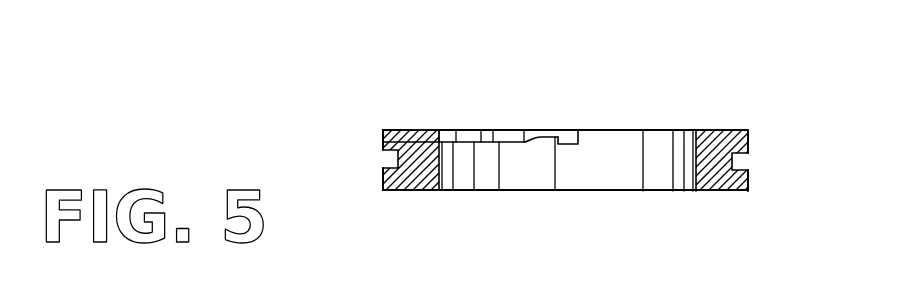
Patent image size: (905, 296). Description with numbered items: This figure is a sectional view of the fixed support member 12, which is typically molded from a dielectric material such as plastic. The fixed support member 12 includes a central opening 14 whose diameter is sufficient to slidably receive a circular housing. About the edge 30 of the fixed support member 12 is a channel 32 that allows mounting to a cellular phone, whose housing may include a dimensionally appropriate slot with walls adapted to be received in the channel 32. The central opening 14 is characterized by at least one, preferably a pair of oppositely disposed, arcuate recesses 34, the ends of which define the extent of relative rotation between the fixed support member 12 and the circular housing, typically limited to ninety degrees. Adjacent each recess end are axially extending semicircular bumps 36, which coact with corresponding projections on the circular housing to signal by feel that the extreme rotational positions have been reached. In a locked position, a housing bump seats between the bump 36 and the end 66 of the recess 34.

The fixed support member 12 is at (581, 114).
The central opening 14 is at (695, 170).
The edge 30 is at (749, 142).
The channel 32 is at (392, 170).
The arcuate recess 34 is at (493, 131).
The semicircular bump 36 is at (542, 131).
The end of recess 66 is at (564, 131).